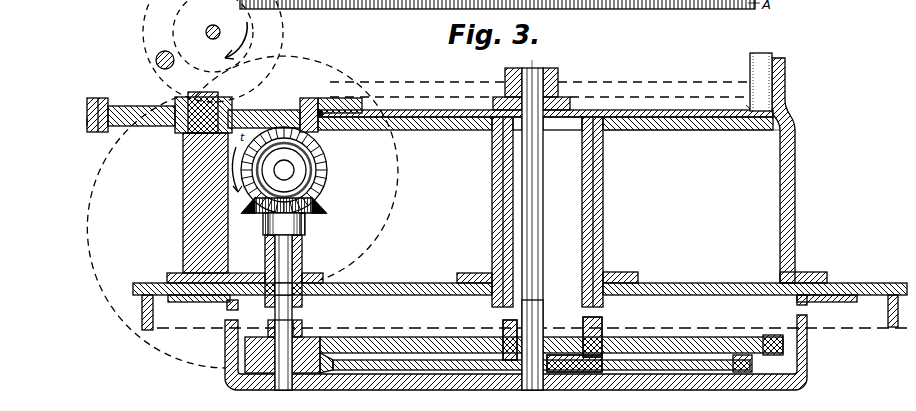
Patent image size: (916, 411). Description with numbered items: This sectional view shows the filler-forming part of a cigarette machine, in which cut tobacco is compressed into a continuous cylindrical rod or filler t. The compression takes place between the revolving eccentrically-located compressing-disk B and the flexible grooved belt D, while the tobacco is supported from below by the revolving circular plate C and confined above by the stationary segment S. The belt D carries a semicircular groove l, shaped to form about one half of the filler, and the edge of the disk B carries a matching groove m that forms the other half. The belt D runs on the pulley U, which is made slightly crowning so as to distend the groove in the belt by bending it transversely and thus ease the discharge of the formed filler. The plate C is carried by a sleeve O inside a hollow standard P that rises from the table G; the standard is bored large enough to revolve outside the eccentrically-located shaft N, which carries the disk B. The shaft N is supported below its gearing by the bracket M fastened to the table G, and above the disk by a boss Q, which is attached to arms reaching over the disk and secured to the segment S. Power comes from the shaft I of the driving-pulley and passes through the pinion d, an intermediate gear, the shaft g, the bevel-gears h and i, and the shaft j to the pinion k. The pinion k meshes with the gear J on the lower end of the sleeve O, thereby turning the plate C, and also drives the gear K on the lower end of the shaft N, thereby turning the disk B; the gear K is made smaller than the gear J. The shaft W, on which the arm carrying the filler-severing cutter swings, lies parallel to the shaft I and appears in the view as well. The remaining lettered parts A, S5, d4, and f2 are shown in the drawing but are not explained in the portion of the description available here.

The cylinder A is at (755, 62).
The eccentrically-located compressing-disk B is at (668, 110).
The revolving circular plate C is at (691, 139).
The flexible grooved belt D is at (87, 103).
The table G is at (712, 283).
The shaft of the driving-pulley I is at (213, 21).
The gear on the sleeve J is at (425, 337).
The gear on the shaft K is at (752, 365).
The bracket M is at (225, 345).
The eccentrically-located shaft N is at (544, 222).
The sleeve O is at (582, 185).
The hollow standard P is at (492, 181).
The boss Q is at (558, 82).
The stationary segment S is at (345, 100).
The side wall S5 is at (795, 170).
The pulley U is at (141, 109).
The shaft W is at (155, 59).
The pinion d is at (218, 36).
The outer circle d4 is at (146, 20).
The path circle f2 is at (100, 183).
The shaft g is at (293, 170).
The bevel-gear h is at (307, 152).
The bevel-gear i is at (318, 207).
The shaft j is at (302, 254).
The pinion k is at (303, 335).
The groove in the belt l is at (87, 121).
The groove in the disk edge m is at (743, 104).
The continuous cylindrical filler t is at (322, 110).